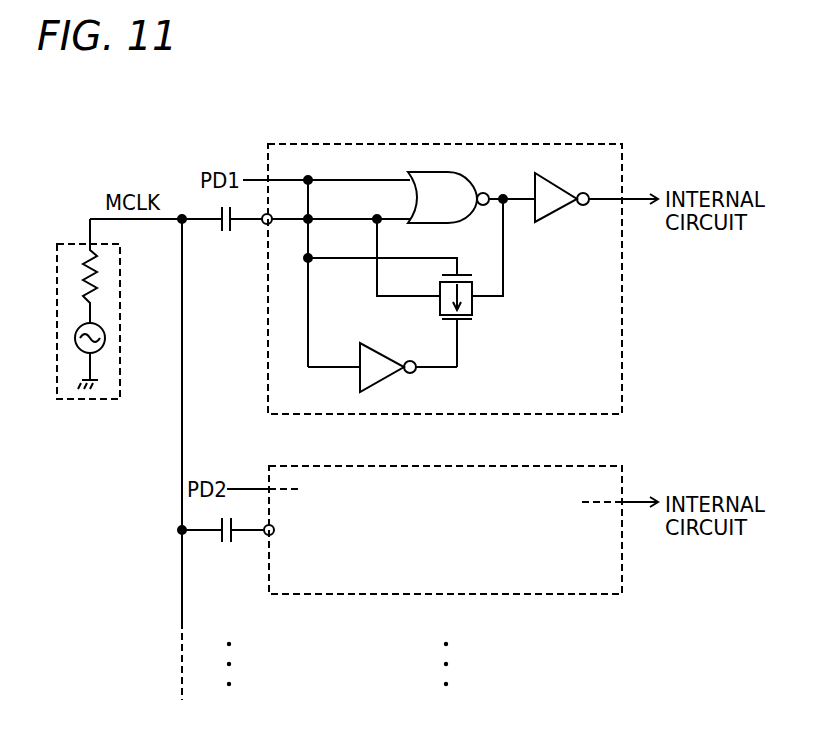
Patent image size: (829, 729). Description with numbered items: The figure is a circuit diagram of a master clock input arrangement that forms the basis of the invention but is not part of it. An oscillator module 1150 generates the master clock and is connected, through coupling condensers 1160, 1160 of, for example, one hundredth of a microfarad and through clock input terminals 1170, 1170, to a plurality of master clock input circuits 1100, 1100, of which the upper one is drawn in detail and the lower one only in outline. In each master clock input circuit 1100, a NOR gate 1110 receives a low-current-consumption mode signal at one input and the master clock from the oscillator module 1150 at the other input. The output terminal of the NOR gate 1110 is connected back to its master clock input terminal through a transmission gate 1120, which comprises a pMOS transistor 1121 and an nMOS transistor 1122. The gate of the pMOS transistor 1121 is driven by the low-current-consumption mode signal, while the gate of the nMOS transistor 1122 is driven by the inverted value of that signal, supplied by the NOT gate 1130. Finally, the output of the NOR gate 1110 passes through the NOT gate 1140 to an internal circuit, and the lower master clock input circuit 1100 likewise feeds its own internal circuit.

The master clock input circuit 1100 is at (548, 140).
The NOR gate 1110 is at (470, 172).
The transmission gate 1120 is at (527, 325).
The pMOS transistor 1121 is at (473, 290).
The nMOS transistor 1122 is at (473, 305).
The NOT gate 1130 is at (385, 383).
The NOT gate 1140 is at (560, 210).
The oscillator module 1150 is at (85, 400).
The coupling condenser 1160 is at (222, 228).
The clock input terminal 1170 is at (266, 226).